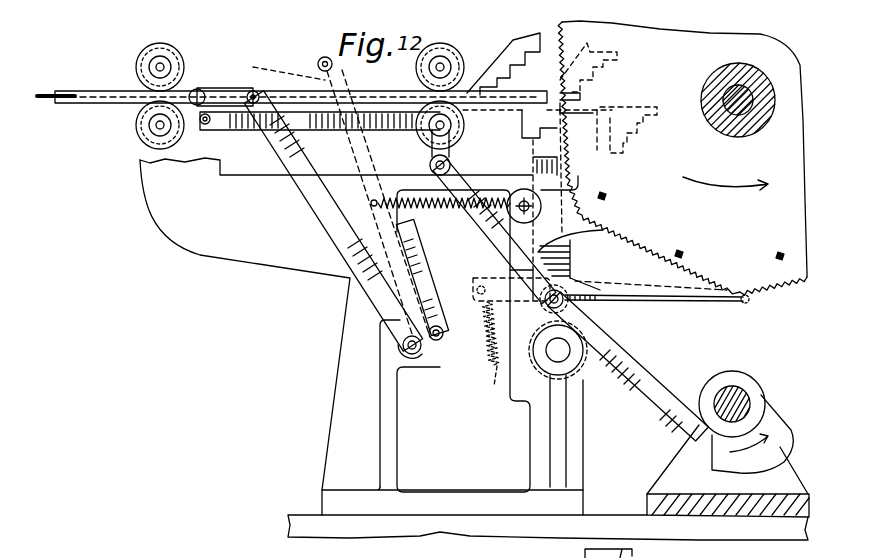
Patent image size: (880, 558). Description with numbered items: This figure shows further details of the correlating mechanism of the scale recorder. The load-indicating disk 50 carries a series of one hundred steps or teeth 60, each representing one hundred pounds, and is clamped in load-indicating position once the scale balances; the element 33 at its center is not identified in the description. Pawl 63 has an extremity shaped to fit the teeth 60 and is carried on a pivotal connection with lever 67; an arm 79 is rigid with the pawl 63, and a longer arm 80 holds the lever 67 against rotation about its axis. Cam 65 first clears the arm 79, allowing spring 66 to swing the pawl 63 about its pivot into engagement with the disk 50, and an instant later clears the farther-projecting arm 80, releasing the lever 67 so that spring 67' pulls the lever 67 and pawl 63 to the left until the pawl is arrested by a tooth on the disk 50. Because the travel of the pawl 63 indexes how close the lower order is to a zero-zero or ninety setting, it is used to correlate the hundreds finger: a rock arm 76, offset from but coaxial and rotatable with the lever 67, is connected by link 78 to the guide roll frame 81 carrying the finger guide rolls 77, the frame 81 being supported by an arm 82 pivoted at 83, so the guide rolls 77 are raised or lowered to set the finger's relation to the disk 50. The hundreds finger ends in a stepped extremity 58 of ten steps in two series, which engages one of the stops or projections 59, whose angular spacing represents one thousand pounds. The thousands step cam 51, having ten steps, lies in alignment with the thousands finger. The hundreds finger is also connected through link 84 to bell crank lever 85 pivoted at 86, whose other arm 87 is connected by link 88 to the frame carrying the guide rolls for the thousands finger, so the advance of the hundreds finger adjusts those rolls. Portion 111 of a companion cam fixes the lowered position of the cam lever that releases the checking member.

The shaft 33 is at (736, 92).
The disk 50 is at (768, 275).
The thousands step cam 51 is at (116, 90).
The stepped extremity 58 is at (518, 42).
The stop or projection 59 is at (607, 194).
The steps or teeth 60 is at (633, 260).
The pawl 63 is at (655, 299).
The cam 65 is at (727, 466).
The spring 66 is at (511, 342).
The lever 67 is at (570, 260).
The spring 67' is at (456, 212).
The rock arm 76 is at (590, 318).
The finger guide rolls 77 is at (464, 133).
The link 78 is at (508, 248).
The arm 79 is at (630, 366).
The arm 80 is at (626, 404).
The guide roll frame 81 is at (408, 116).
The arm 82 is at (370, 197).
The pivot 83 is at (206, 126).
The link 84 is at (232, 90).
The bell crank lever 85 is at (318, 215).
The pivot 86 is at (413, 355).
The other arm 87 is at (430, 344).
The link 88 is at (420, 274).
The portion 111 is at (673, 467).